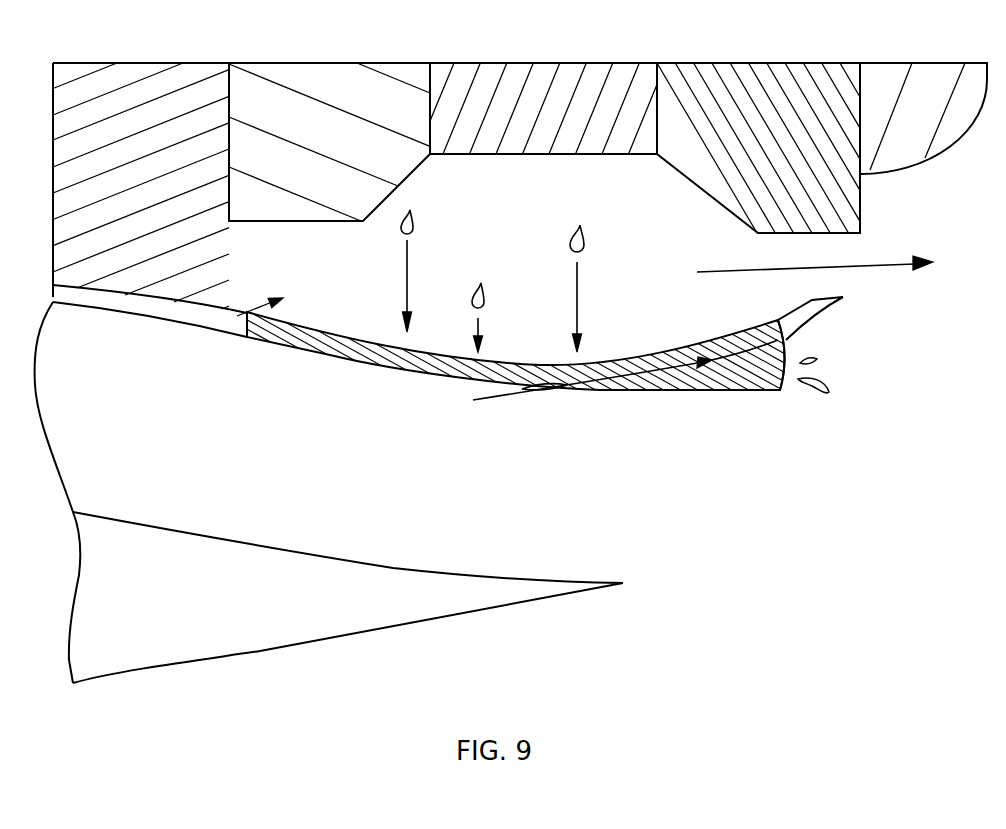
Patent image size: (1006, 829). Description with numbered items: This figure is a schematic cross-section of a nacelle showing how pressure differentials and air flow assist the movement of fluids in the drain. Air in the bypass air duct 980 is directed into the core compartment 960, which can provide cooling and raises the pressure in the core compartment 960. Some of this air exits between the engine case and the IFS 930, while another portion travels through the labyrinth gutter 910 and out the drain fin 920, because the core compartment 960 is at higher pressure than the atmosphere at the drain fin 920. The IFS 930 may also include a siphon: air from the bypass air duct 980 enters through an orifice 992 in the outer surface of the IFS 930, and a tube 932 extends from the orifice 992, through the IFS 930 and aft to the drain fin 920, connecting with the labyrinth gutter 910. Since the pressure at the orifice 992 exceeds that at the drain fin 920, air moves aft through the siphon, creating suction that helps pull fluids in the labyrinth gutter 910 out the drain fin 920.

The labyrinth gutter 910 is at (425, 380).
The drain fin 920 is at (740, 392).
The IFS 930 is at (817, 322).
The tube 932 is at (590, 393).
The core compartment 960 is at (518, 240).
The bypass air duct 980 is at (318, 468).
The orifice 992 is at (545, 392).